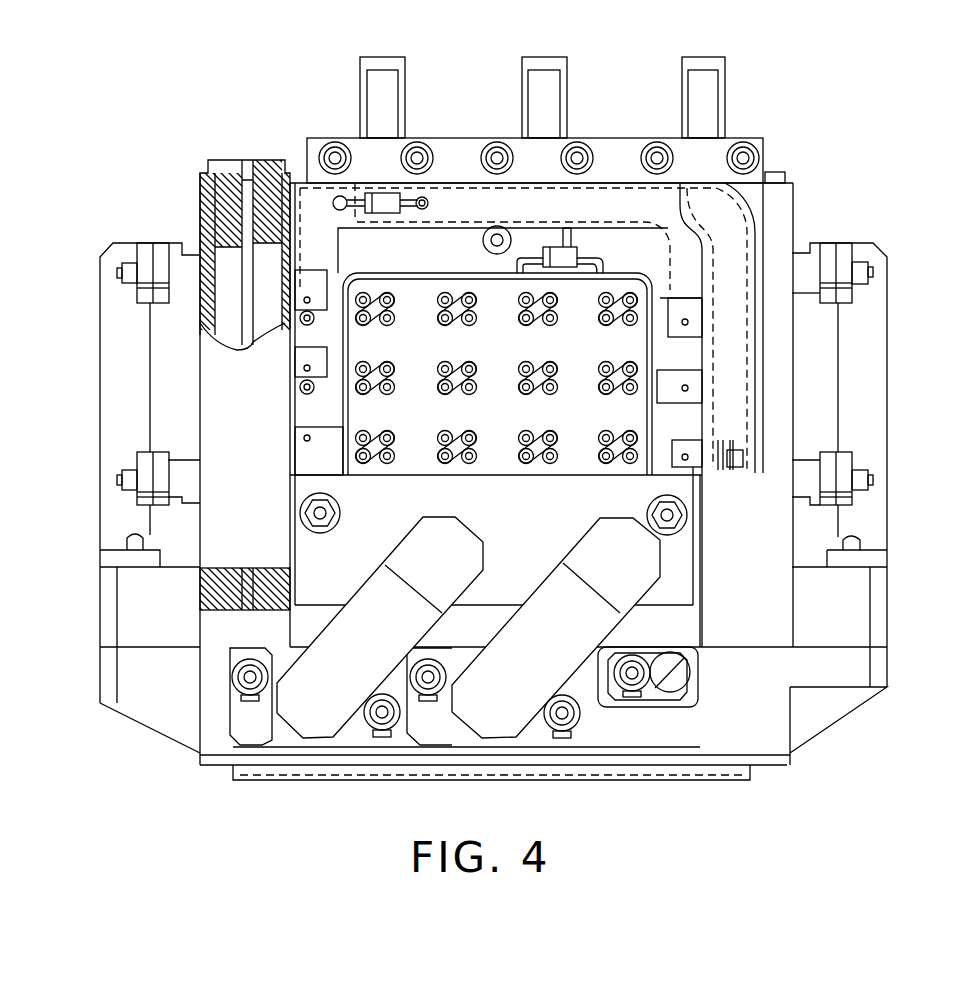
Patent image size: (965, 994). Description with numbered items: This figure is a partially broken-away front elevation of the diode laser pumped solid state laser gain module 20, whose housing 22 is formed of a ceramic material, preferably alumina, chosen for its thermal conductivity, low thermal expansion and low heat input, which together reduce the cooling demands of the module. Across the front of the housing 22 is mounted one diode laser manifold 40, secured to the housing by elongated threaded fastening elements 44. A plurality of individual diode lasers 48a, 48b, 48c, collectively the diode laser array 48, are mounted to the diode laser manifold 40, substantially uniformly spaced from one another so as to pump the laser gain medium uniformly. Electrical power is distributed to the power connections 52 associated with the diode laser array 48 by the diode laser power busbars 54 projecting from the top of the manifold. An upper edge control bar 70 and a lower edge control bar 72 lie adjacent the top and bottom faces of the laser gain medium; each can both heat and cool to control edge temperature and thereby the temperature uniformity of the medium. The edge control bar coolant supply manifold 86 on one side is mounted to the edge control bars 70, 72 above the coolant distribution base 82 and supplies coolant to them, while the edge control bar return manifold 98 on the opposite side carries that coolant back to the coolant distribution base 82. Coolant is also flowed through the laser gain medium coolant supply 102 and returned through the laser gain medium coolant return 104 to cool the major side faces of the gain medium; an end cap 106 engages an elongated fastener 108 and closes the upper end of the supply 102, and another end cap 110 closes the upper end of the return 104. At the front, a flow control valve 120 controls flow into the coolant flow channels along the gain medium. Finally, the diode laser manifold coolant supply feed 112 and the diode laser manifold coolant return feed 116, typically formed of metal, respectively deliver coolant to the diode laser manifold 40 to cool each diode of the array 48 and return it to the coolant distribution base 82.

The laser gain module 20 is at (657, 68).
The housing 22 is at (793, 222).
The diode laser manifold 40 is at (685, 490).
The elongated threaded fastening element 44 is at (340, 514).
The diode laser array 48 is at (413, 303).
The diode laser 48a is at (450, 322).
The diode laser 48b is at (372, 392).
The diode laser 48c is at (390, 458).
The power connection 52 is at (345, 290).
The diode laser power busbar 54 is at (405, 58).
The upper edge control bar 70 is at (188, 268).
The lower edge control bar 72 is at (182, 480).
The coolant distribution base 82 is at (792, 730).
The edge control bar coolant supply manifold 86 is at (98, 343).
The edge control bar return manifold 98 is at (888, 370).
The laser gain medium coolant supply 102 is at (213, 593).
The laser gain medium coolant return 104 is at (782, 205).
The end cap 106 is at (220, 162).
The elongated fastener 108 is at (247, 200).
The end cap 110 is at (774, 168).
The diode laser manifold coolant supply feed 112 is at (303, 707).
The diode laser manifold coolant return feed 116 is at (480, 718).
The flow control valve 120 is at (672, 688).